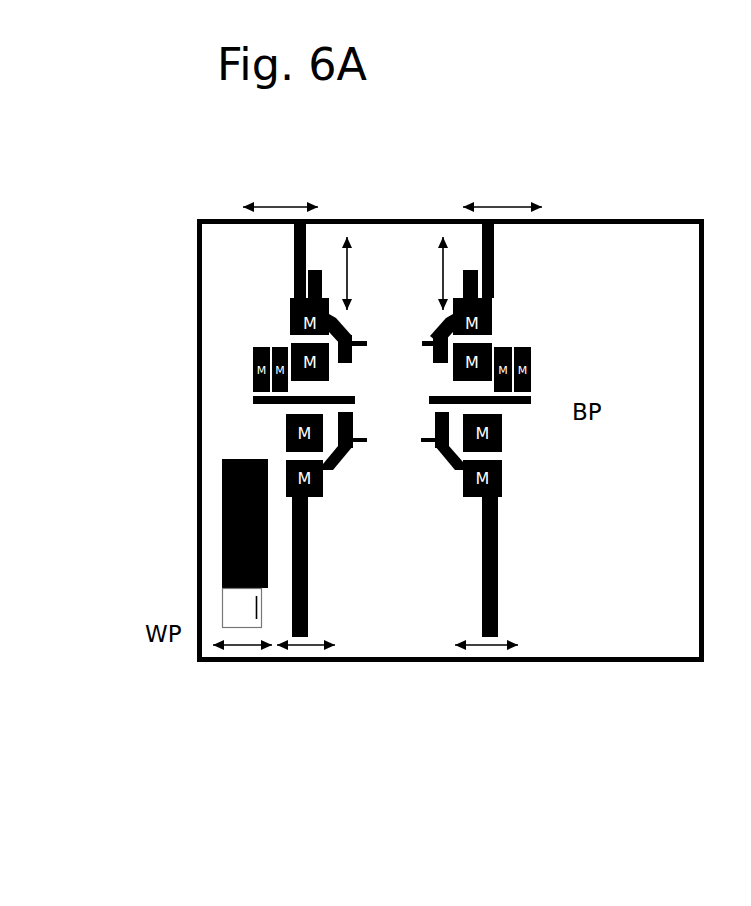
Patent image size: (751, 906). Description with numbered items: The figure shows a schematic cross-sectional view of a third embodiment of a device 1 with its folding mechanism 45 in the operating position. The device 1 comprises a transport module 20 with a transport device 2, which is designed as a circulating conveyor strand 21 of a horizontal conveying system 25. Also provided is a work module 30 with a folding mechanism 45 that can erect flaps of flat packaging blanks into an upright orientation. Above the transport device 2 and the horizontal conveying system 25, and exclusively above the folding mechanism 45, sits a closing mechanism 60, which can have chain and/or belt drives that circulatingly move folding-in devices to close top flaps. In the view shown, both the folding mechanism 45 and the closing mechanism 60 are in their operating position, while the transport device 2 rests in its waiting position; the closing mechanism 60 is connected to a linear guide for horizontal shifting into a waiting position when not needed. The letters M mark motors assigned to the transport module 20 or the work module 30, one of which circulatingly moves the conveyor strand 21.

The device 1 is at (355, 797).
The transport device 2 is at (174, 523).
The transport module 20 is at (174, 451).
The circulating conveyor strand 21 is at (222, 483).
The horizontal conveying system 25 is at (208, 540).
The work module 30 is at (580, 586).
The folding mechanism 45 is at (415, 459).
The closing mechanism 60 is at (568, 290).